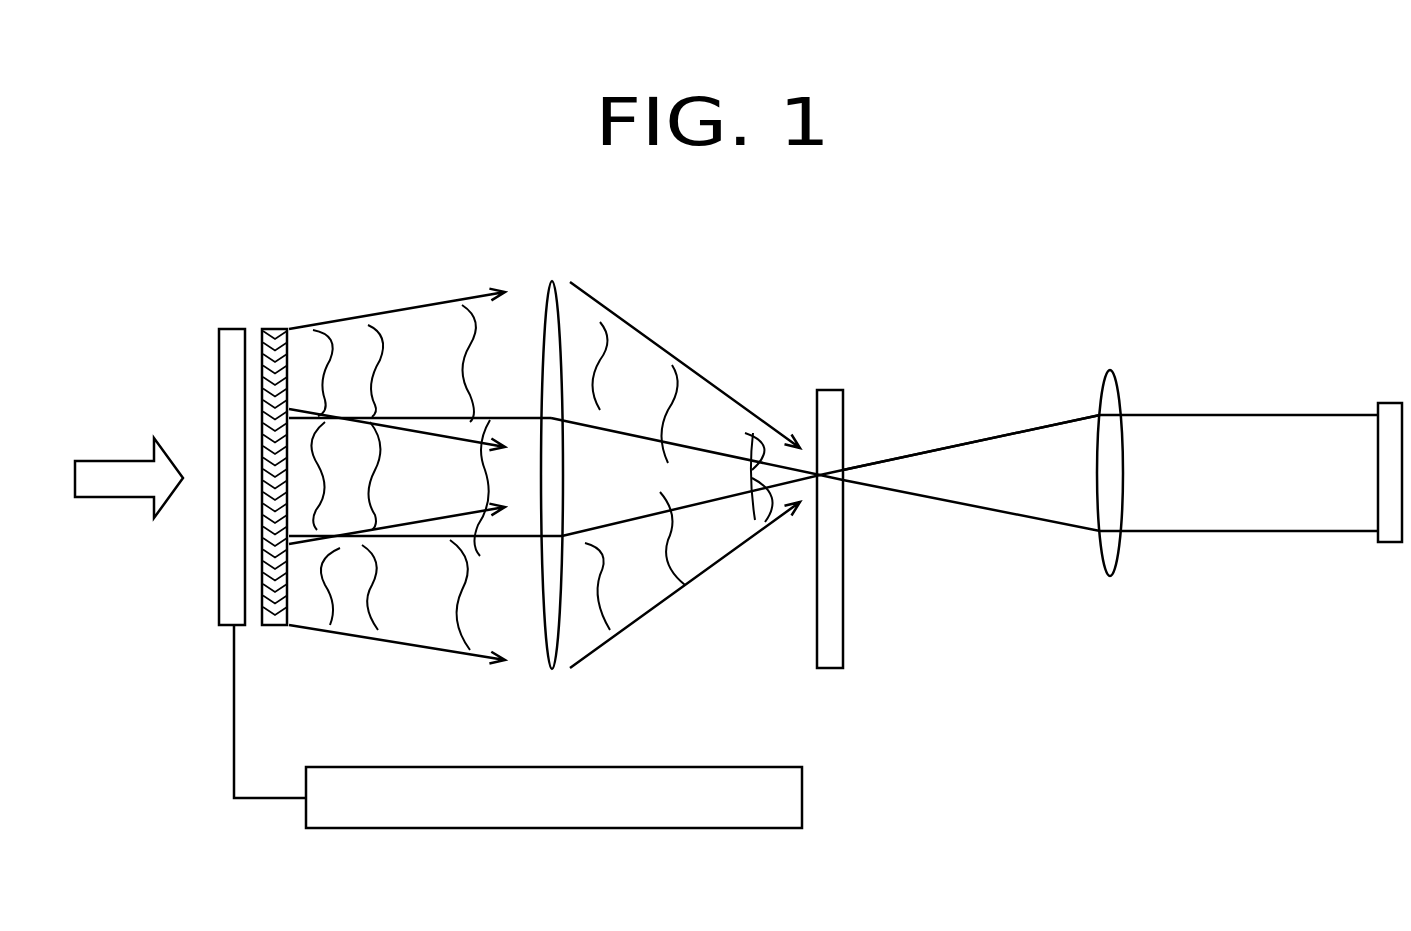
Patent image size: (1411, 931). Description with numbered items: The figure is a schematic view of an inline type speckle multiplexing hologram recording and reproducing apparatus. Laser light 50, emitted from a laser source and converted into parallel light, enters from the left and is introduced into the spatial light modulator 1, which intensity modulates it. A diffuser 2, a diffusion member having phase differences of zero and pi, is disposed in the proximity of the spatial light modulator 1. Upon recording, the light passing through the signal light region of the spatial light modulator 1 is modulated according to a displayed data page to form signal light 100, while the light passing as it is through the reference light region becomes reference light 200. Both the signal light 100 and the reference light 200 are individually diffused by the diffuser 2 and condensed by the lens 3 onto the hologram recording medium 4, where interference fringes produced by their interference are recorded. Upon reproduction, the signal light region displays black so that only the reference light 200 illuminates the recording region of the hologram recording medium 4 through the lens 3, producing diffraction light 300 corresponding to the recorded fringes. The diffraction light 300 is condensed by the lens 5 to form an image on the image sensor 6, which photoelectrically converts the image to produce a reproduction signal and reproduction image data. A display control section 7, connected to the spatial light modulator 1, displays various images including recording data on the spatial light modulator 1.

The spatial light modulator 1 is at (219, 584).
The diffuser 2 is at (273, 329).
The lens 3 is at (551, 280).
The hologram recording medium 4 is at (828, 390).
The lens 5 is at (1108, 370).
The image sensor 6 is at (1389, 403).
The display control section 7 is at (802, 793).
The laser light 50 is at (98, 458).
The signal light 100 is at (413, 432).
The reference light 200 is at (401, 308).
The diffraction light 300 is at (992, 437).